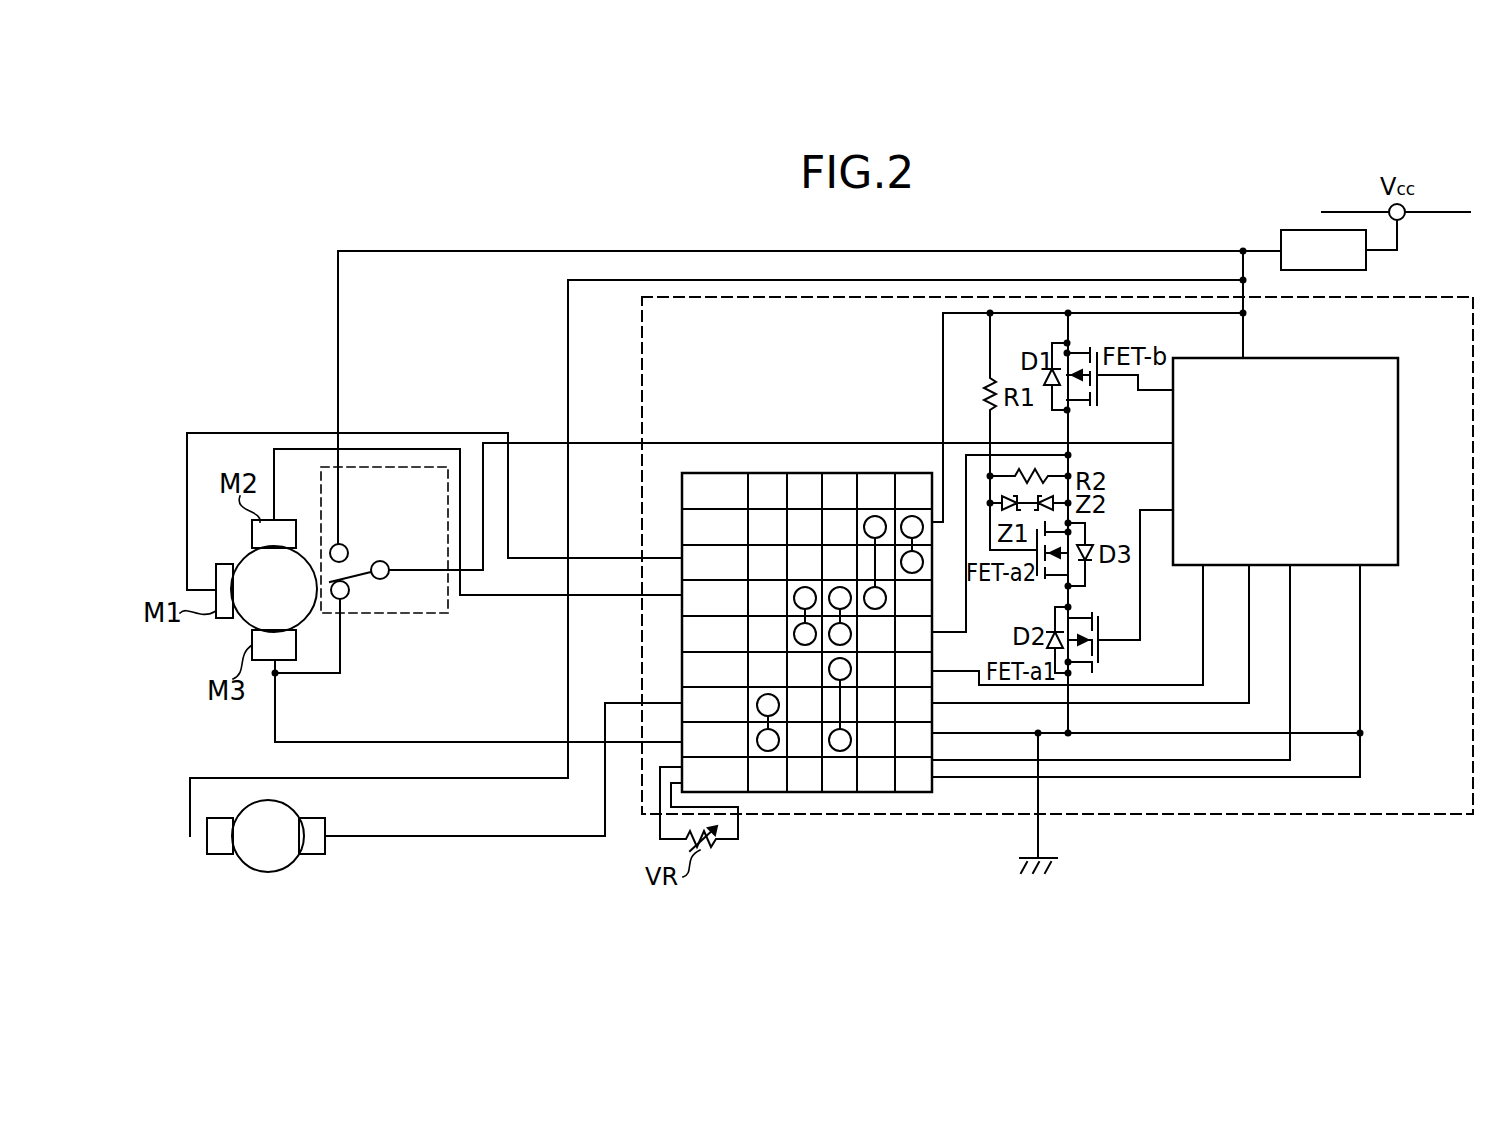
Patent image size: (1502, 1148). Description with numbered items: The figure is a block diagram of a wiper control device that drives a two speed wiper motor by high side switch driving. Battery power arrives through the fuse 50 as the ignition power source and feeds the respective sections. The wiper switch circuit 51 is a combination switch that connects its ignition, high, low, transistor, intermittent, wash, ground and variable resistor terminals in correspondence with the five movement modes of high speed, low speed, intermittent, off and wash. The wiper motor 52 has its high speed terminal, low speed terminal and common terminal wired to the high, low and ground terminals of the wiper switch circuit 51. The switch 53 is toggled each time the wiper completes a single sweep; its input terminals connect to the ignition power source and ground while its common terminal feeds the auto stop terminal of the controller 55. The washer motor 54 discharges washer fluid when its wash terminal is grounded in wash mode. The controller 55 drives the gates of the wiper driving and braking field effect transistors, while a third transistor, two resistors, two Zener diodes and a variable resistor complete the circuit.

The fuse 50 is at (1297, 230).
The wiper switch circuit 51 is at (799, 794).
The wiper motor 52 is at (310, 621).
The switch 53 is at (375, 467).
The washer motor 54 is at (295, 861).
The controller 55 is at (1360, 358).